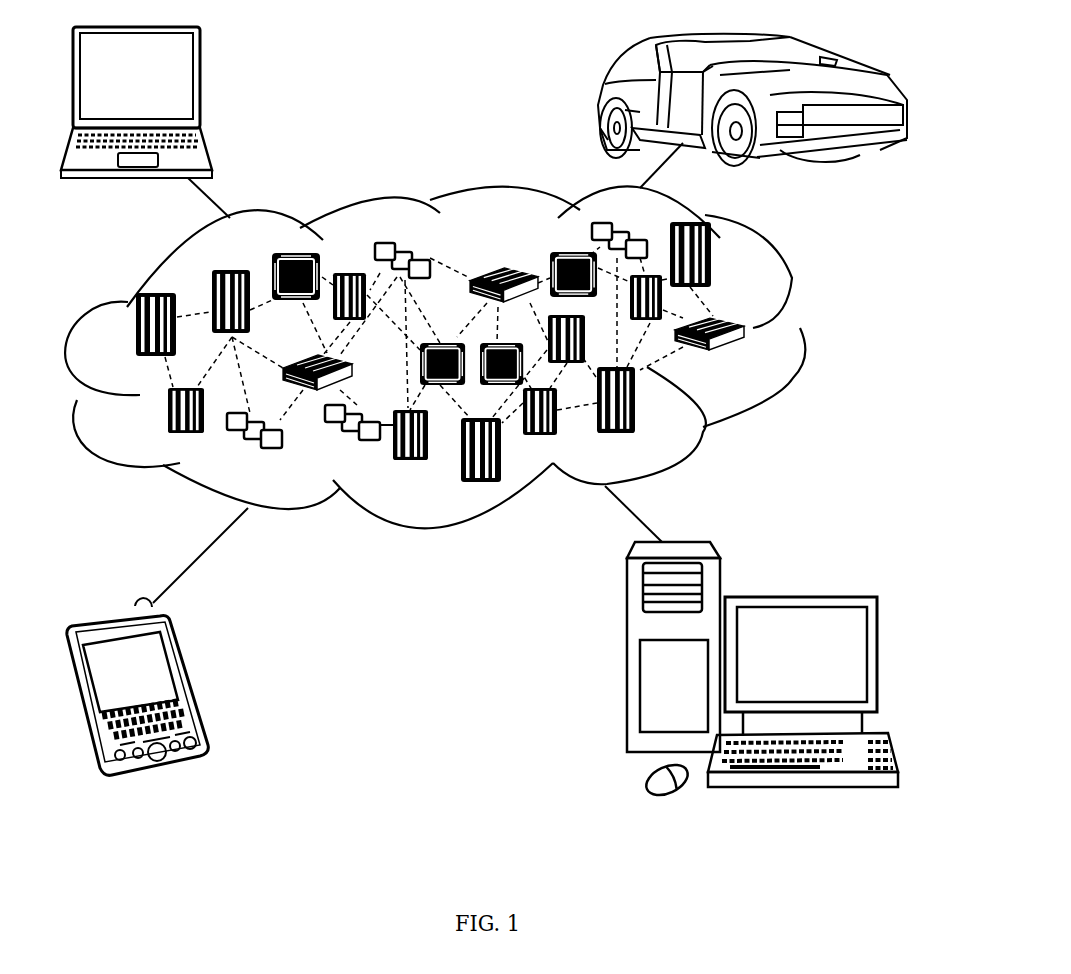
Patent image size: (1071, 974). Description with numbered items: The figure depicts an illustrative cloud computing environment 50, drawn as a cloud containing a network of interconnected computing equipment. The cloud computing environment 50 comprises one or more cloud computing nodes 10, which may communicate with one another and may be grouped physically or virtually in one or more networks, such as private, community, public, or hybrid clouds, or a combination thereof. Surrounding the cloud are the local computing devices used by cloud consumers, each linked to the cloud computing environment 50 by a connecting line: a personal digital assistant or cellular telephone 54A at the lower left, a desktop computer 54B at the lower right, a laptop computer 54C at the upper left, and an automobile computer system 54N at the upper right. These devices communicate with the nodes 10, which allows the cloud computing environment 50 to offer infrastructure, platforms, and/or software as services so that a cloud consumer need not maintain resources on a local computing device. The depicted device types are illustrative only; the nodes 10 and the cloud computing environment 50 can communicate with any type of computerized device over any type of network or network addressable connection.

The cloud computing node 10 is at (755, 362).
The cloud computing environment 50 is at (800, 333).
The personal digital assistant (PDA) or cellular telephone 54A is at (192, 679).
The desktop computer 54B is at (797, 597).
The laptop computer 54C is at (202, 85).
The automobile computer system 54N is at (600, 98).